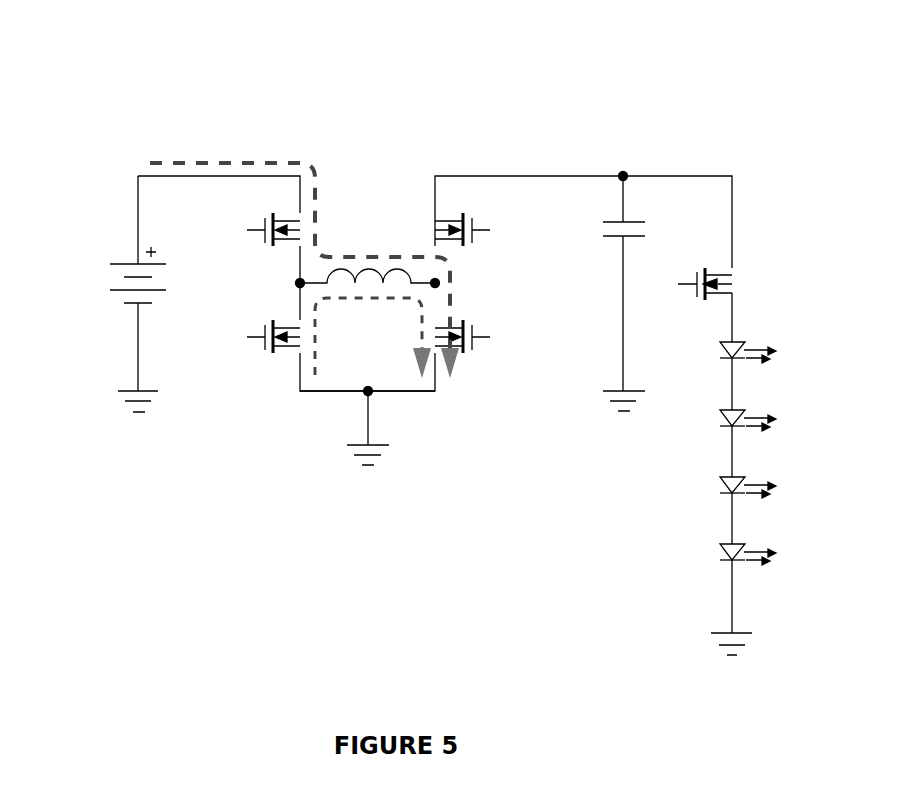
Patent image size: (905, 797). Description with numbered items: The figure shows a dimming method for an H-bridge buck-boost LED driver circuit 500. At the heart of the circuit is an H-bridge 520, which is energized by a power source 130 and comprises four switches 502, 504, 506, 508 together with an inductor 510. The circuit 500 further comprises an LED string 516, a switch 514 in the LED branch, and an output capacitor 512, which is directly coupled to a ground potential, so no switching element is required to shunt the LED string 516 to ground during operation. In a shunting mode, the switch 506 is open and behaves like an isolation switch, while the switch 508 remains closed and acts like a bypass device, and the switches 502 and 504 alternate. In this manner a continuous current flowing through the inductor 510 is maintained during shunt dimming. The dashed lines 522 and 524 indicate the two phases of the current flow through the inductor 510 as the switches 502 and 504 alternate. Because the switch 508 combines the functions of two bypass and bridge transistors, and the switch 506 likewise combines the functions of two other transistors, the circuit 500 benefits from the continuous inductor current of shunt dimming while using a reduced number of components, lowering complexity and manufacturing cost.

The H-bridge buck-boost LED driver circuit 500 is at (382, 61).
The power source 130 is at (97, 291).
The switch 502 is at (266, 247).
The switch 504 is at (258, 353).
The switch 506 is at (472, 245).
The switch 508 is at (472, 357).
The inductor 510 is at (378, 271).
The output capacitor 512 is at (612, 243).
The switch 514 is at (686, 299).
The LED string 516 is at (806, 534).
The H-bridge 520 is at (276, 448).
The dashed line 522 is at (277, 158).
The dashed line 524 is at (369, 305).